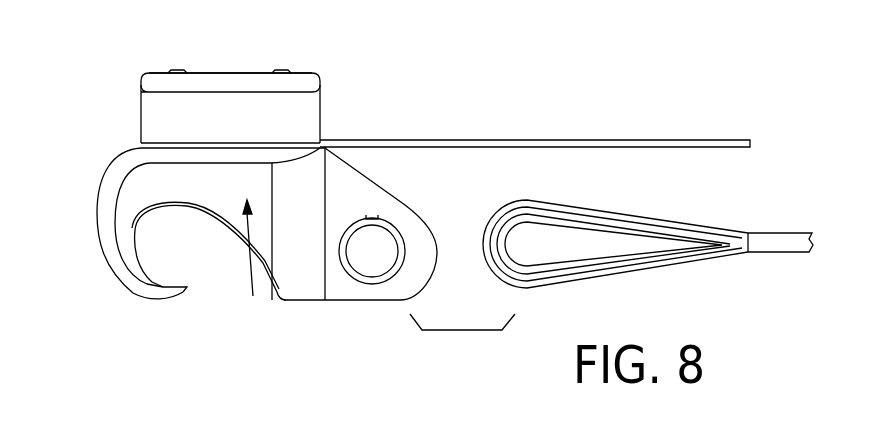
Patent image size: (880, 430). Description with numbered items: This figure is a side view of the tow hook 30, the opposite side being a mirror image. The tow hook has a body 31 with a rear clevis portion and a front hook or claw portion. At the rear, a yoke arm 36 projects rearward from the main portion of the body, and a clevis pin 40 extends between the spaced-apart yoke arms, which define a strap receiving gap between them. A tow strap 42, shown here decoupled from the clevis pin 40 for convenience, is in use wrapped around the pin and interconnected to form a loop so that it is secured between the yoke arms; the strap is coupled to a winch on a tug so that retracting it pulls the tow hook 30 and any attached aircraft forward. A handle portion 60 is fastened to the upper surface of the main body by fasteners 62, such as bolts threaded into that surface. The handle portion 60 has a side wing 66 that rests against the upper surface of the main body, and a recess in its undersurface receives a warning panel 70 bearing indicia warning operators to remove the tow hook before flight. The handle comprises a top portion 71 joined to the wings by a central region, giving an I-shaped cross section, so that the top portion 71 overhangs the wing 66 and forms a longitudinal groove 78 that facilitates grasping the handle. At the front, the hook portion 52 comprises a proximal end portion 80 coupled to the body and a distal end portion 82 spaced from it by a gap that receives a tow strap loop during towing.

The tow hook 30 is at (350, 117).
The body 31 is at (256, 268).
The second yoke arm 36 is at (397, 202).
The clevis pin 40 is at (370, 247).
The tow strap 42 is at (772, 233).
The hook portion 52 is at (120, 285).
The handle portion 60 is at (142, 77).
The fasteners 62 is at (174, 70).
The side wing 66 is at (198, 141).
The warning panel 70 is at (527, 139).
The top portion 71 is at (224, 71).
The groove 78 is at (175, 108).
The proximal end portion 80 is at (137, 228).
The distal end portion 82 is at (187, 288).